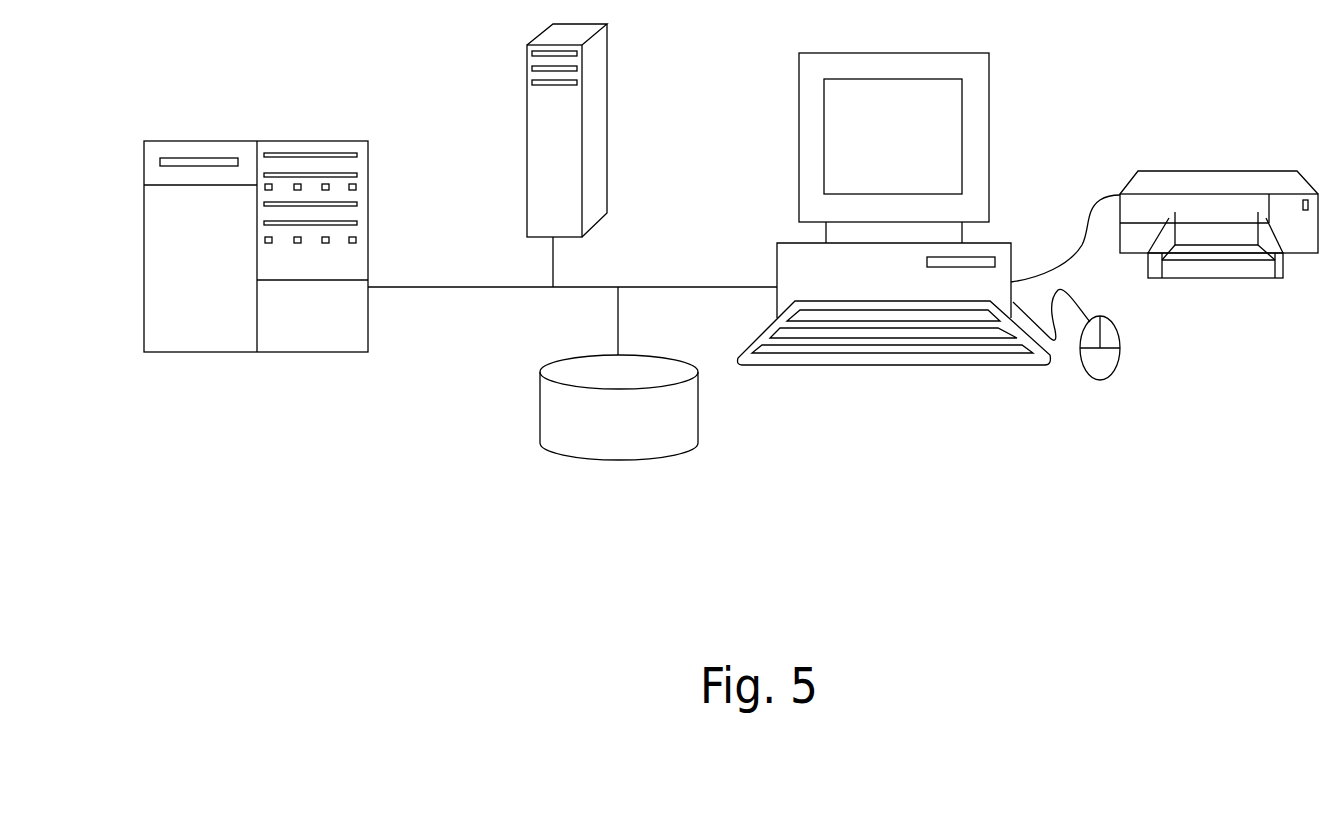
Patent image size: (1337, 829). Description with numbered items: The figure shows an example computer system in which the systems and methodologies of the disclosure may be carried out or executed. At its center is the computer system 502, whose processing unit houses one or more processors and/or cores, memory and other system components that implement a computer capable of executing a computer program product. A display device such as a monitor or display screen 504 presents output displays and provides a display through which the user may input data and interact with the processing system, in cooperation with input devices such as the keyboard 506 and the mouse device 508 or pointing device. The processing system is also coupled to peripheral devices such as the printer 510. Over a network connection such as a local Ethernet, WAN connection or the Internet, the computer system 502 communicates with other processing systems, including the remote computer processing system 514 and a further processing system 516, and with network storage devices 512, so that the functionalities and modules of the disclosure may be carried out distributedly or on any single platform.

The computer system 502 is at (782, 268).
The monitor or display screen 504 is at (989, 130).
The keyboard 506 is at (955, 367).
The mouse device 508 is at (1118, 363).
The printer 510 is at (1217, 170).
The network storage devices 512 is at (643, 457).
The remote computer processing system 514 is at (607, 117).
The processing system 516 is at (302, 141).